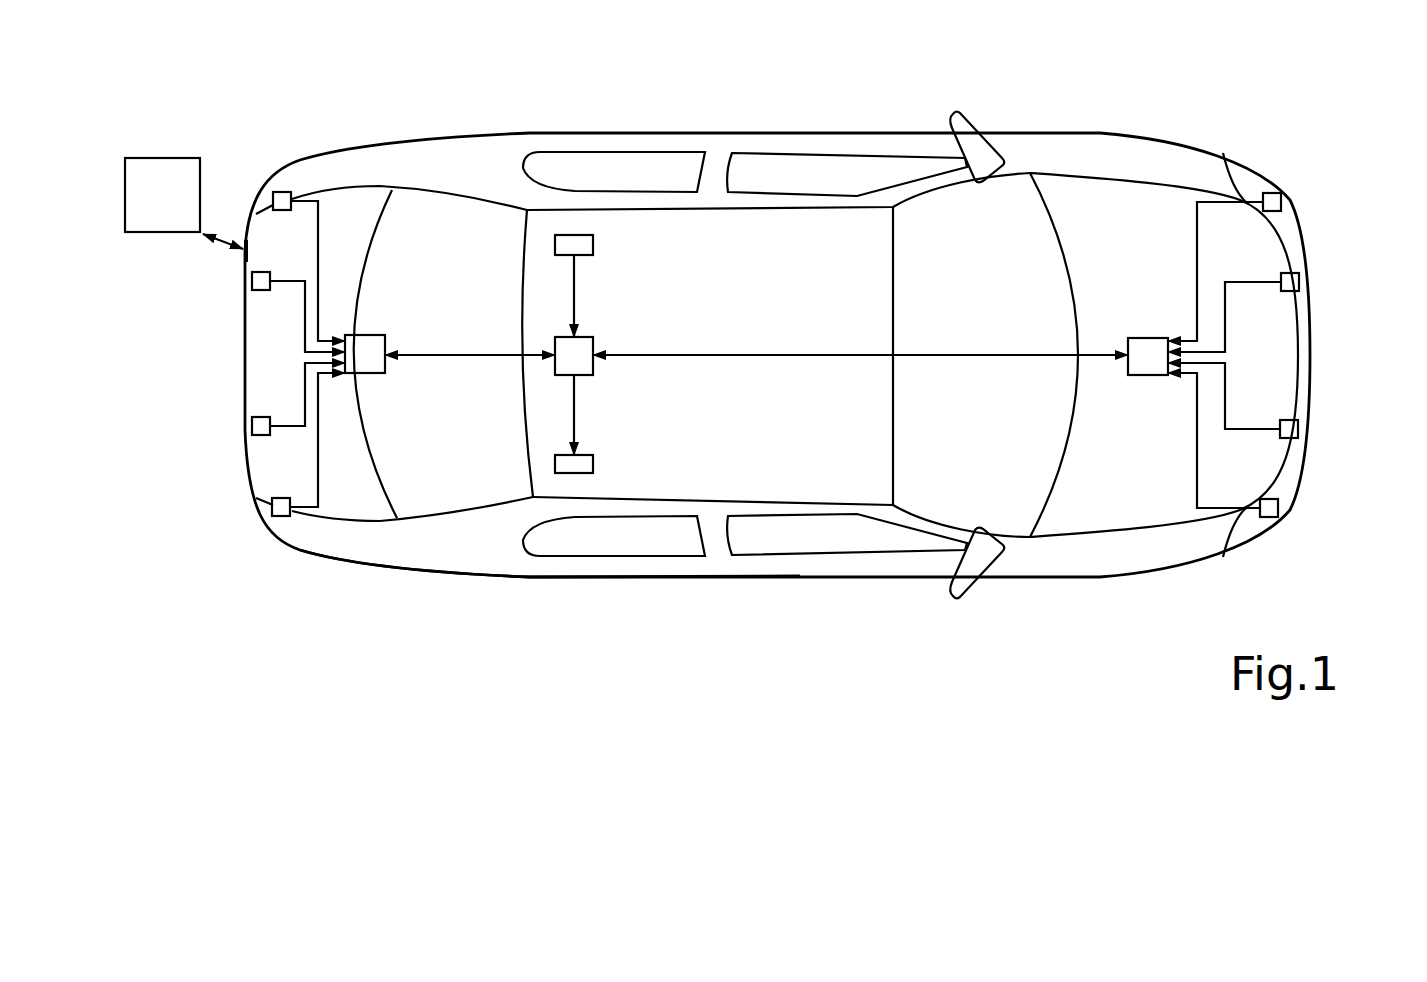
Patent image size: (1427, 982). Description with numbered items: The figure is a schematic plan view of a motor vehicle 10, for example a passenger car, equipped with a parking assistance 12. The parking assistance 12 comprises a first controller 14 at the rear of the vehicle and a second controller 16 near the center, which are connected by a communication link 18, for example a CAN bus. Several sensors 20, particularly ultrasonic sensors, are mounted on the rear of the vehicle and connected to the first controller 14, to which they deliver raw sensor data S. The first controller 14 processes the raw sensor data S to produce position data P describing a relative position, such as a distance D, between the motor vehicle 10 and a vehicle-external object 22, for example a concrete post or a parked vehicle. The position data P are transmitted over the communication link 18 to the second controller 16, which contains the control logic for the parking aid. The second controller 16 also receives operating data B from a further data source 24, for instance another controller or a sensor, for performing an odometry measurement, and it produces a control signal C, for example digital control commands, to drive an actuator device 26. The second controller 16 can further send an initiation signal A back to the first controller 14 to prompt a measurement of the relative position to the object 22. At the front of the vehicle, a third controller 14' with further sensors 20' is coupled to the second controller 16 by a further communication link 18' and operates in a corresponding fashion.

The motor vehicle 10 is at (1100, 133).
The parking assistance 12 is at (449, 540).
The first controller 14 is at (379, 309).
The third controller 14' is at (1161, 298).
The second controller 16 is at (595, 343).
The communication link 18 is at (470, 297).
The further communication link 18' is at (860, 297).
The sensors 20 is at (239, 327).
The further sensors 20' is at (1291, 351).
The vehicle-external object 22 is at (180, 158).
The further data source 24 is at (595, 248).
The actuator device 26 is at (595, 464).
The raw sensor data S is at (318, 300).
The distance D is at (227, 240).
The position data P is at (458, 328).
The initiation signal A is at (458, 378).
The operating data B is at (575, 297).
The control signal C is at (575, 425).